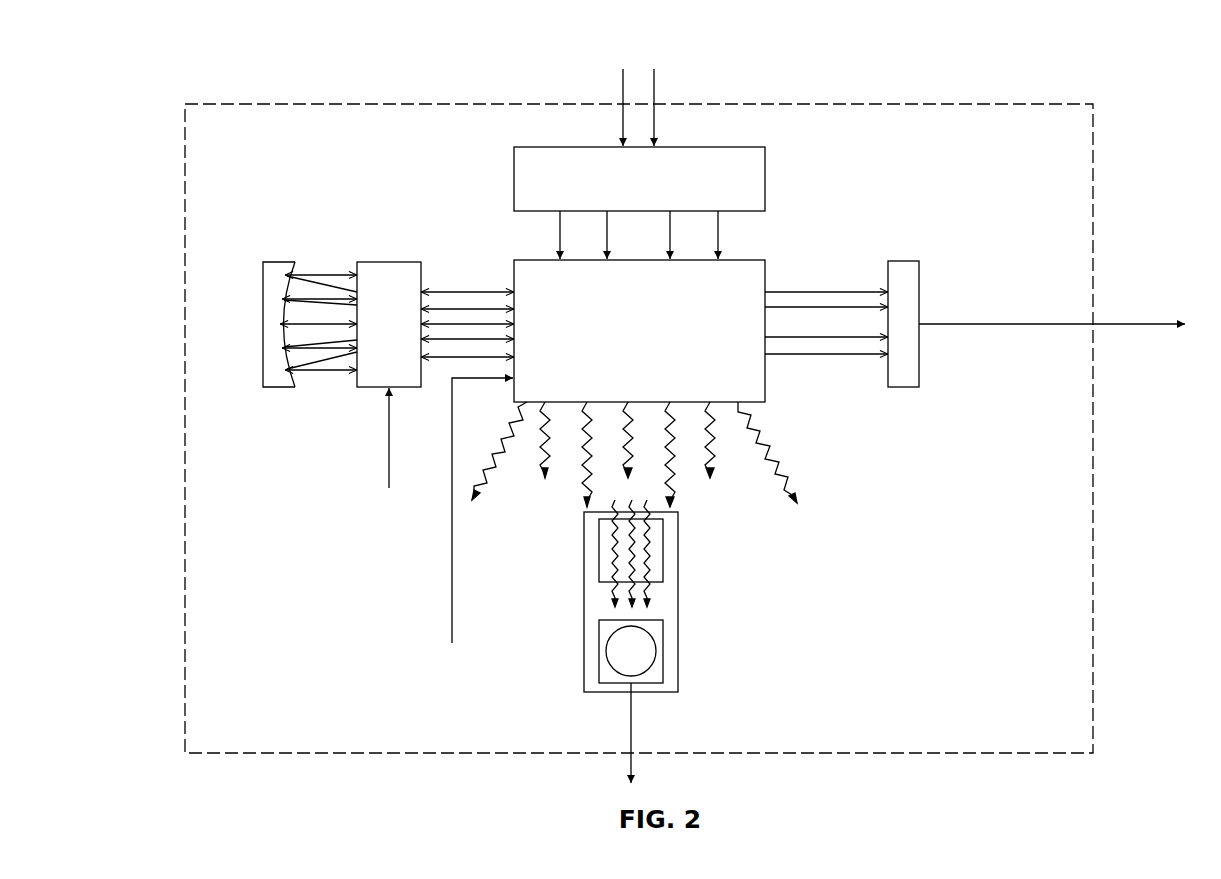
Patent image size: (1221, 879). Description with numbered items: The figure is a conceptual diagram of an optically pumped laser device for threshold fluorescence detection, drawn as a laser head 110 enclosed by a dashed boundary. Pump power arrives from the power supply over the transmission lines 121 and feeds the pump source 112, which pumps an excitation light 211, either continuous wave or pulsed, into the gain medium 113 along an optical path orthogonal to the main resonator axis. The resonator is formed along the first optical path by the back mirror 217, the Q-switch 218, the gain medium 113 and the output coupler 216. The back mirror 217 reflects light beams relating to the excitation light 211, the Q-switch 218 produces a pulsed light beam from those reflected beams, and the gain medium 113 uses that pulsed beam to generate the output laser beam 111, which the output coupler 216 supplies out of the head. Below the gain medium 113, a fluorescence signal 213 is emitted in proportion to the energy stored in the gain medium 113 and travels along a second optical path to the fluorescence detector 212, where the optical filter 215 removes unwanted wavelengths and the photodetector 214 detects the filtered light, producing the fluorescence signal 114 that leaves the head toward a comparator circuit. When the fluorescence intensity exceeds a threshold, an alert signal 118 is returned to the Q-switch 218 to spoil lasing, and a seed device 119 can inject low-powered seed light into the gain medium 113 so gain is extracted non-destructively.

The laser head 110 is at (500, 104).
The transmission lines 121 is at (640, 80).
The pump source 112 is at (639, 179).
The excitation light 211 is at (498, 237).
The gain medium 113 is at (639, 331).
The output coupler 216 is at (905, 259).
The output laser beam 111 is at (1030, 322).
The back mirror 217 is at (280, 262).
The Q-switch 218 is at (435, 324).
The alert signal 118 is at (389, 477).
The seed device 119 is at (459, 550).
The fluorescence signal 213 is at (812, 447).
The fluorescence detector 212 is at (584, 590).
The optical filter 215 is at (599, 550).
The photodetector 214 is at (599, 652).
The fluorescence signal 114 is at (630, 735).